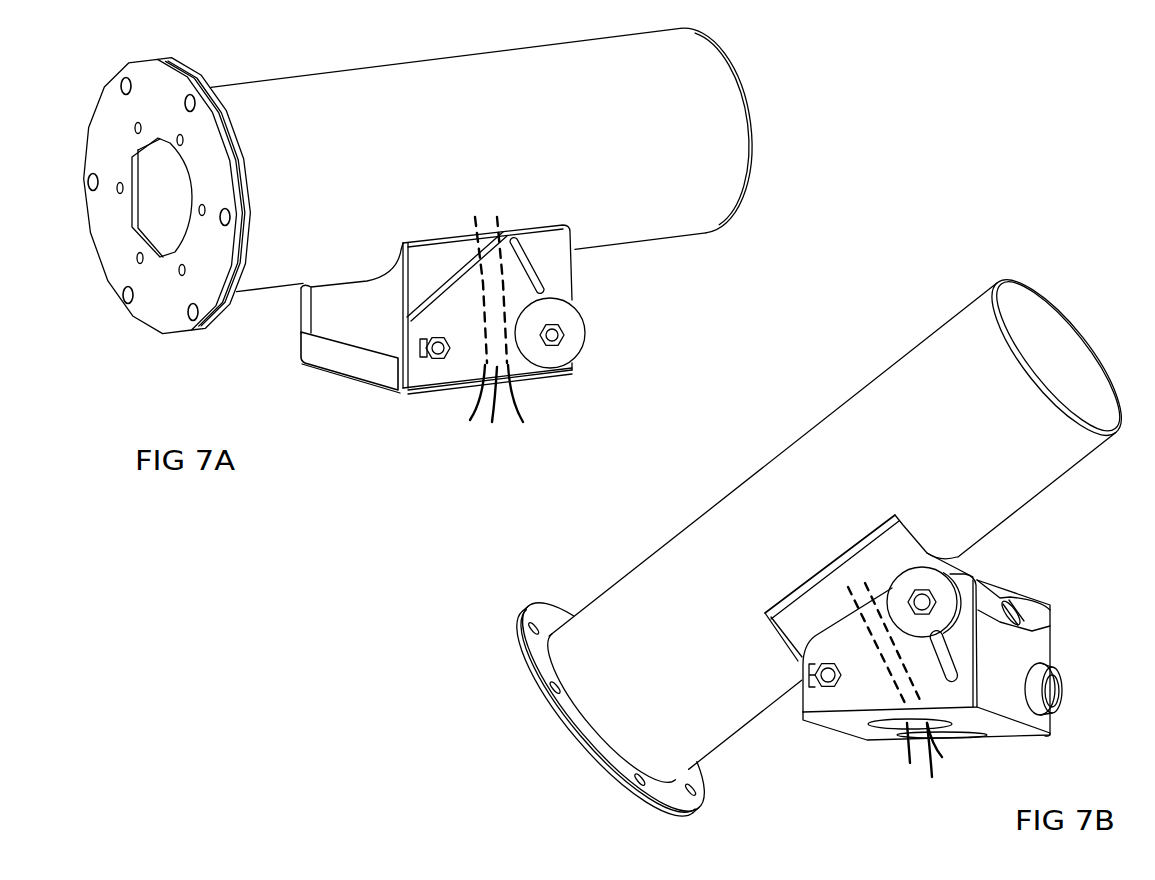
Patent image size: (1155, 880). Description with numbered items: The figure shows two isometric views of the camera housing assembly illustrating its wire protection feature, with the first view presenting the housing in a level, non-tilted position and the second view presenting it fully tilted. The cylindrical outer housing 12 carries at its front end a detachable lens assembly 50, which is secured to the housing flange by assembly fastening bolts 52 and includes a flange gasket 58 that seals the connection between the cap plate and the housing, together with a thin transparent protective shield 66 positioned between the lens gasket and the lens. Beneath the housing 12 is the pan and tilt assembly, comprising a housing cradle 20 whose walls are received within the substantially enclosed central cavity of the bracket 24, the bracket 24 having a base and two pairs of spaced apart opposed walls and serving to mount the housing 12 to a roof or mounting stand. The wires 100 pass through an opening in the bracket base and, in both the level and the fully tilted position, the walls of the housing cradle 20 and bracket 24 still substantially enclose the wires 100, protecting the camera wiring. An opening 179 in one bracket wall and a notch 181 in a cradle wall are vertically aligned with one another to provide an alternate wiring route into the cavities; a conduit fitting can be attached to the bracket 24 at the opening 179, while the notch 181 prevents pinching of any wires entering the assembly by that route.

In FIG. 7A, the outer housing 12 is at (388, 70).
In FIG. 7B, the outer housing 12 is at (832, 433).
In FIG. 7A, the lens assembly 50 is at (150, 73).
In FIG. 7B, the lens assembly 50 is at (517, 635).
In FIG. 7A, the bolts 52 is at (122, 80).
In FIG. 7A, the protective shield 66 is at (197, 72).
In FIG. 7A, the flange gasket 58 is at (147, 225).
In FIG. 7A, the housing cradle 20 is at (330, 310).
In FIG. 7B, the housing cradle 20 is at (805, 623).
In FIG. 7A, the bracket 24 is at (347, 365).
In FIG. 7B, the bracket 24 is at (822, 682).
In FIG. 7A, the wires 100 is at (477, 403).
In FIG. 7B, the wires 100 is at (912, 745).
In FIG. 7B, the notch 181 is at (1000, 603).
In FIG. 7B, the opening 179 is at (1062, 697).